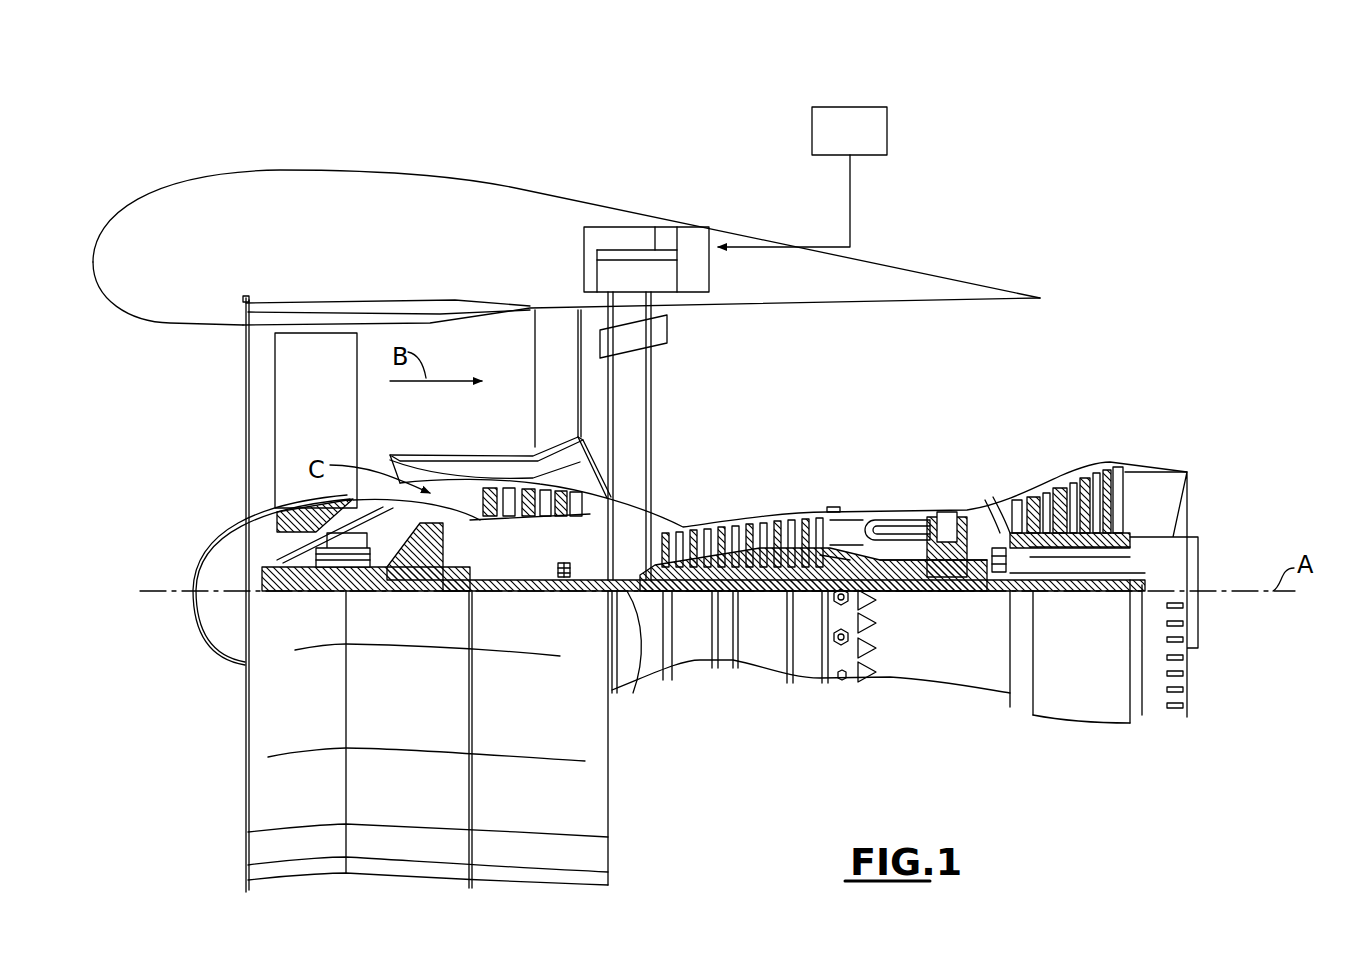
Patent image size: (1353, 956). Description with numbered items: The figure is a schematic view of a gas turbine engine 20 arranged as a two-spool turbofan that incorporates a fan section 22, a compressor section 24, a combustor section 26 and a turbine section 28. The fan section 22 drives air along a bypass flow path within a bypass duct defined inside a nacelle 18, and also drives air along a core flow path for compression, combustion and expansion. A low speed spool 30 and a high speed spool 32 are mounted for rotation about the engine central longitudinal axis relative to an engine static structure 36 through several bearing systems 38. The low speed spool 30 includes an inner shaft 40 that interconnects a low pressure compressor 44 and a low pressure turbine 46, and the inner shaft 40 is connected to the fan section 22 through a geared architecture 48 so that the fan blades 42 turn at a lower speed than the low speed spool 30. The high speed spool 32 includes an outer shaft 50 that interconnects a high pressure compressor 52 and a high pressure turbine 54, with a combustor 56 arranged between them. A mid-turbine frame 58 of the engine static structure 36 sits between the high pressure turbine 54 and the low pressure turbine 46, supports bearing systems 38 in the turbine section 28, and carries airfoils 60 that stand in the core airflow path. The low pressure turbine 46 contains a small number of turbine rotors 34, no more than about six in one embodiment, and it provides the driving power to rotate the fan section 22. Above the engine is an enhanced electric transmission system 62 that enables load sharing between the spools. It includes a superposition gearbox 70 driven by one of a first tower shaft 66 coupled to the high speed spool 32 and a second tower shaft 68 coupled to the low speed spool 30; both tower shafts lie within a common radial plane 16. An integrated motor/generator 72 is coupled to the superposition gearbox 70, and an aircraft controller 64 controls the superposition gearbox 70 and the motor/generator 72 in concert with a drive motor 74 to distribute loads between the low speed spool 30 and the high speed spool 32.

The common radial plane 16 is at (667, 330).
The nacelle 18 is at (512, 207).
The gas turbine engine 20 is at (1062, 226).
The fan section 22 is at (232, 279).
The compressor section 24 is at (470, 424).
The combustor section 26 is at (877, 424).
The turbine section 28 is at (973, 424).
The low speed spool 30 is at (765, 600).
The high speed spool 32 is at (812, 520).
The turbine rotors 34 is at (1093, 560).
The engine static structure 36 is at (806, 682).
The bearing systems 38 is at (325, 593).
The inner shaft 40 is at (627, 605).
The fan blades 42 is at (332, 436).
The low pressure compressor 44 is at (540, 493).
The low pressure turbine 46 is at (1073, 480).
The geared architecture 48 is at (436, 580).
The outer shaft 50 is at (890, 580).
The high pressure compressor 52 is at (733, 530).
The high pressure turbine 54 is at (947, 513).
The combustor 56 is at (887, 520).
The mid-turbine frame 58 is at (988, 497).
The airfoils 60 is at (1020, 585).
The electric transmission system 62 is at (625, 225).
The aircraft controller 64 is at (880, 128).
The first tower shaft 66 is at (652, 375).
The second tower shaft 68 is at (578, 367).
The superposition gearbox 70 is at (600, 277).
The motor/generator 72 is at (590, 250).
The drive motor 74 is at (670, 232).